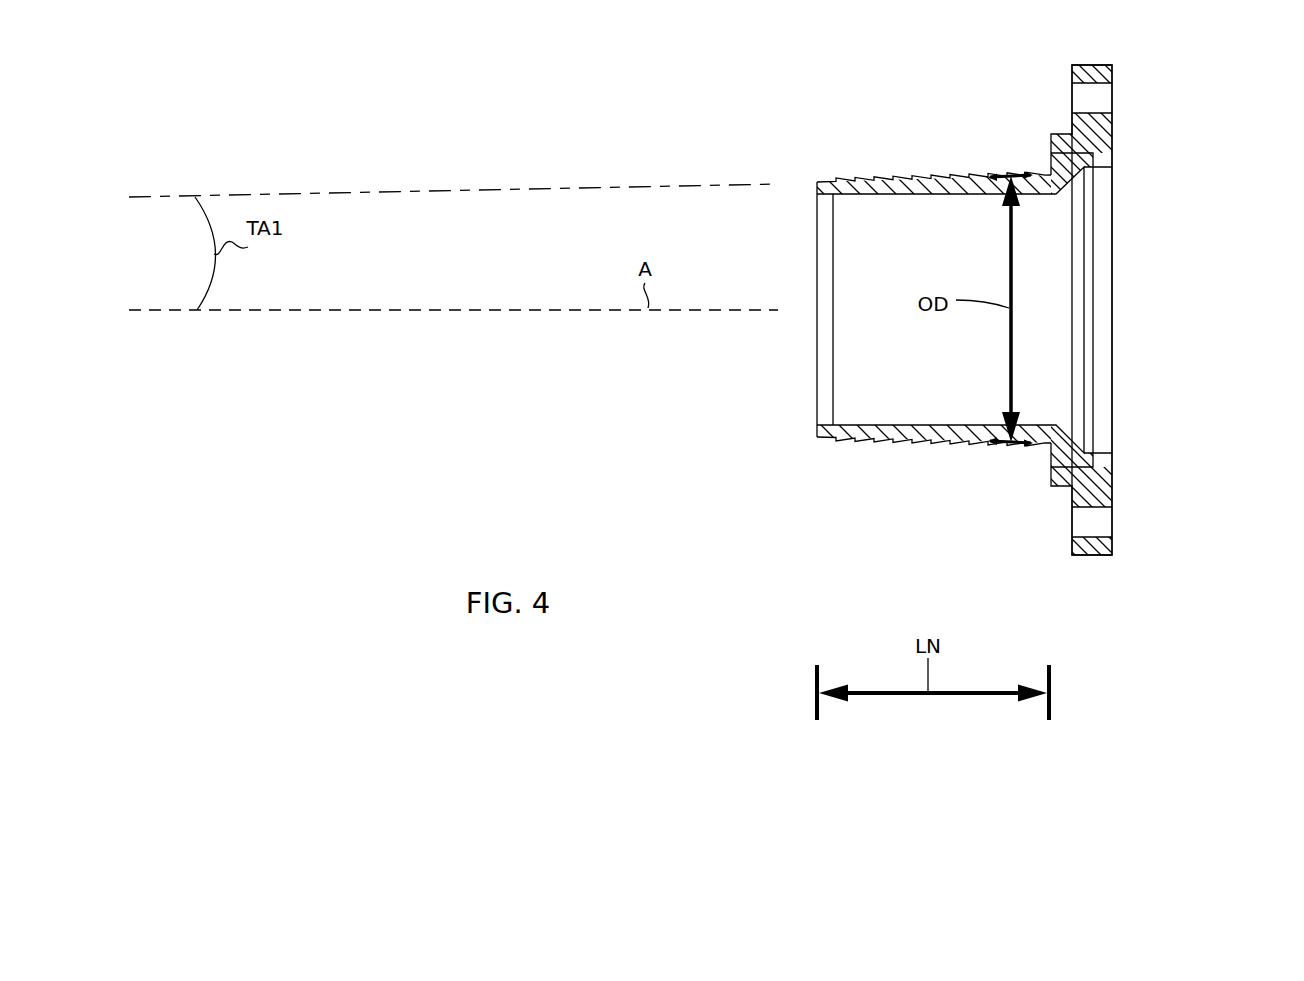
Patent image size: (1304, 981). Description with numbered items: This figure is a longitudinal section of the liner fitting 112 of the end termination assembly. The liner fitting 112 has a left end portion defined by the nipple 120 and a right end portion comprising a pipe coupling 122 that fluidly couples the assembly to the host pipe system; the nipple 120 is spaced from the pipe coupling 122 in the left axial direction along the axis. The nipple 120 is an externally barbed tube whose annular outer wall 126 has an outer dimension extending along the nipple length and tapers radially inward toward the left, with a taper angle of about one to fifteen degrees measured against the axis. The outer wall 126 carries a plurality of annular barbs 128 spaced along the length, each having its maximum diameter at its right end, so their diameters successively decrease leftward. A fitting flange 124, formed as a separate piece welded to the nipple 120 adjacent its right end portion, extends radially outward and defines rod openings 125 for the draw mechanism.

The liner fitting 112 is at (978, 373).
The nipple 120 is at (912, 311).
The pipe coupling 122 is at (1112, 163).
The fitting flange 124 is at (1072, 73).
The rod openings 125 is at (1112, 526).
The annular outer wall 126 is at (853, 181).
The annular barbs 128 is at (975, 443).